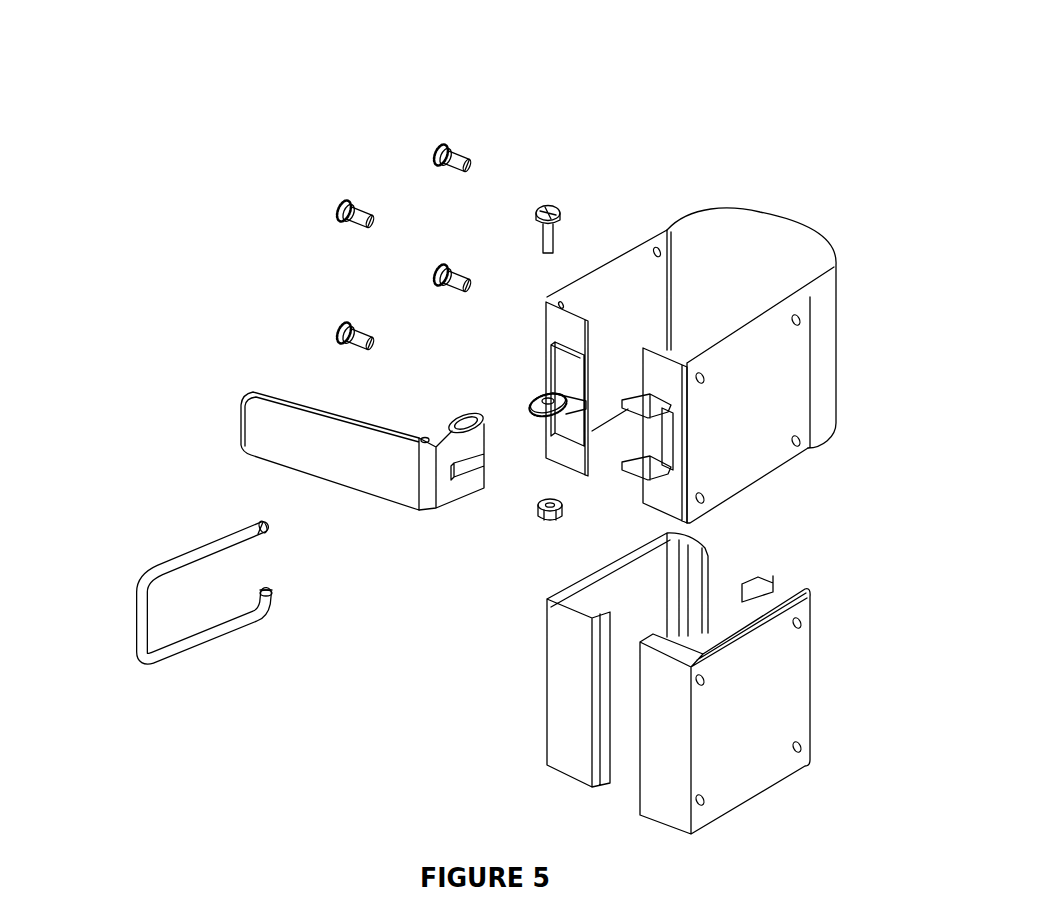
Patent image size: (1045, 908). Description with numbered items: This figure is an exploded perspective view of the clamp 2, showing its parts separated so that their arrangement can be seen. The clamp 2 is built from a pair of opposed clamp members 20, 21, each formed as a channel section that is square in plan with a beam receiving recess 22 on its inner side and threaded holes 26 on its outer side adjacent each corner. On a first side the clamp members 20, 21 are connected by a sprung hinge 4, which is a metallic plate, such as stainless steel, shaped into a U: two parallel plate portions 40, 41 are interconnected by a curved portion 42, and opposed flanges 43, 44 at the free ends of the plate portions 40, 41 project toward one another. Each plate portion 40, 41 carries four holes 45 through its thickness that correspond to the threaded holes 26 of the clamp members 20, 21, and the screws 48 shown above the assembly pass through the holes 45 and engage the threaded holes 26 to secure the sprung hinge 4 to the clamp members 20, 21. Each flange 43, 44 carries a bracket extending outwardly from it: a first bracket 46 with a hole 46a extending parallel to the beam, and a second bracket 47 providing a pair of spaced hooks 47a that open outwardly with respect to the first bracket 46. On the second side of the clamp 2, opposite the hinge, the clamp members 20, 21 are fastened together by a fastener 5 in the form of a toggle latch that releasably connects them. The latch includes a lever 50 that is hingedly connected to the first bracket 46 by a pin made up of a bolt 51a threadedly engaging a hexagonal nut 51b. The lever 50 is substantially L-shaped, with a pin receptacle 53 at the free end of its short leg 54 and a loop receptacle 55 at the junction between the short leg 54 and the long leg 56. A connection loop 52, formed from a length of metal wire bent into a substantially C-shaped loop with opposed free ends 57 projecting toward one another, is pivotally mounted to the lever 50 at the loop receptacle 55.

The clamp 2 is at (286, 85).
The sprung hinge 4 is at (842, 190).
The fastener 5 is at (146, 356).
The clamp member 20 is at (509, 664).
The clamp member 21 is at (841, 675).
The beam receiving recess 22 is at (660, 622).
The threaded holes 26 is at (704, 798).
The plate portion 40 is at (631, 305).
The plate portion 41 is at (763, 467).
The curved portion 42 is at (770, 295).
The flange 43 is at (567, 327).
The flange 44 is at (662, 366).
The holes 45 is at (704, 497).
The first bracket 46 is at (532, 410).
The hole 46a is at (548, 398).
The second bracket 47 is at (617, 391).
The hooks 47a is at (628, 470).
The screws 48 is at (365, 338).
The lever 50 is at (312, 402).
The bolt 51a is at (550, 230).
The hexagonal nut 51b is at (538, 508).
The connection loop 52 is at (218, 630).
The pin receptacle 53 is at (466, 414).
The short leg 54 is at (452, 485).
The loop receptacle 55 is at (422, 439).
The long leg 56 is at (356, 468).
The free ends 57 is at (266, 583).